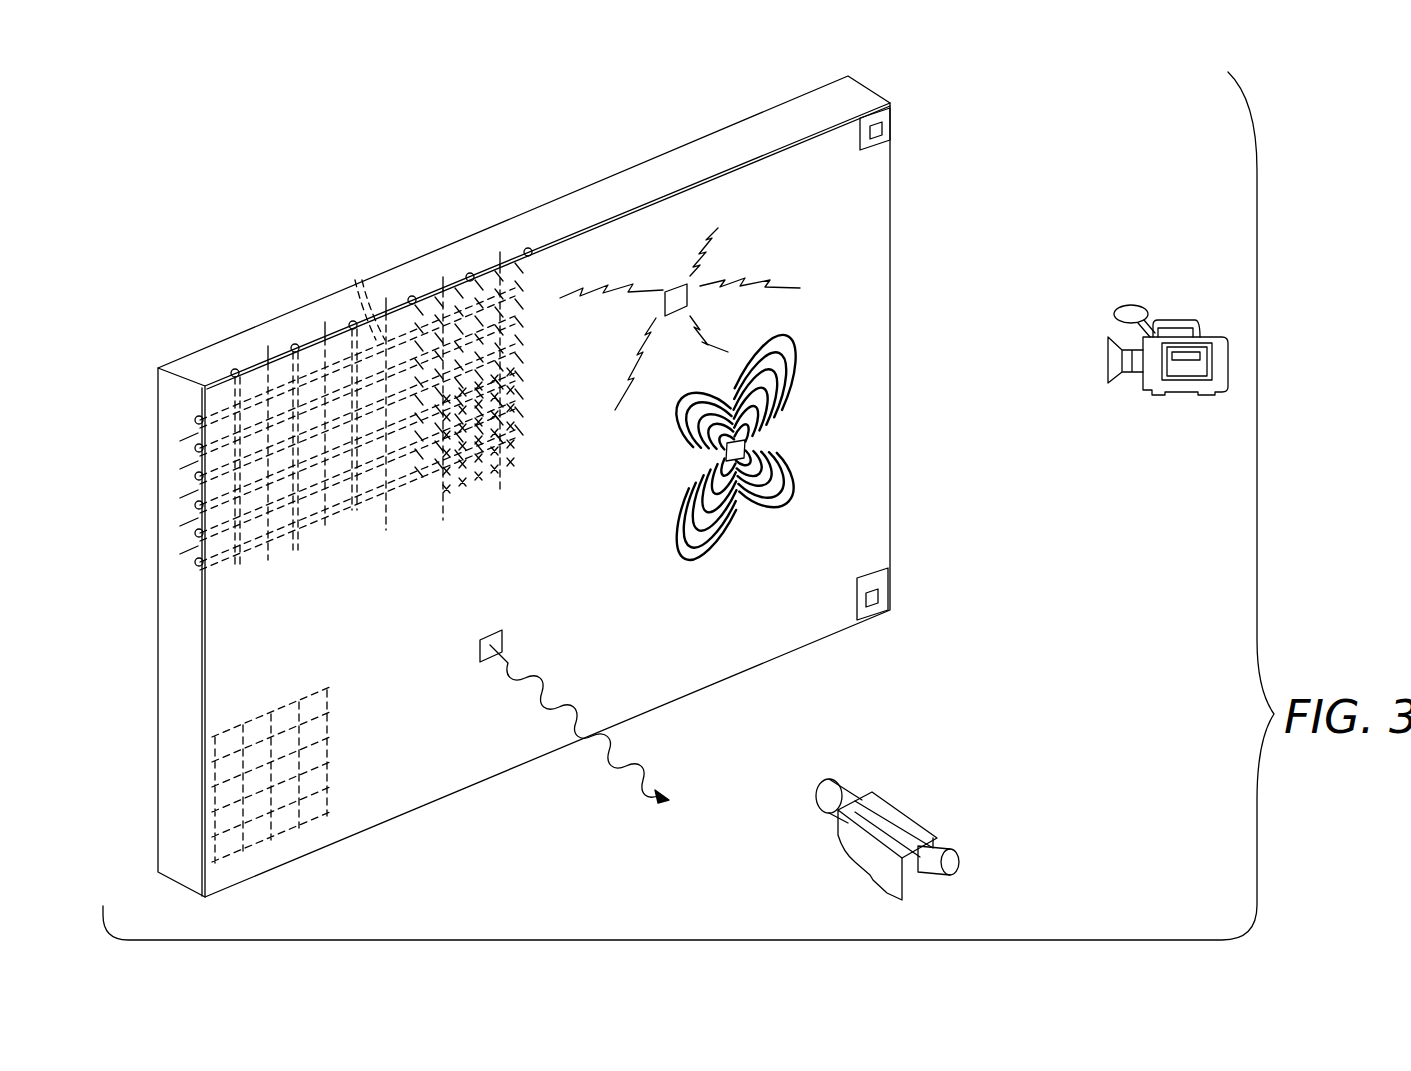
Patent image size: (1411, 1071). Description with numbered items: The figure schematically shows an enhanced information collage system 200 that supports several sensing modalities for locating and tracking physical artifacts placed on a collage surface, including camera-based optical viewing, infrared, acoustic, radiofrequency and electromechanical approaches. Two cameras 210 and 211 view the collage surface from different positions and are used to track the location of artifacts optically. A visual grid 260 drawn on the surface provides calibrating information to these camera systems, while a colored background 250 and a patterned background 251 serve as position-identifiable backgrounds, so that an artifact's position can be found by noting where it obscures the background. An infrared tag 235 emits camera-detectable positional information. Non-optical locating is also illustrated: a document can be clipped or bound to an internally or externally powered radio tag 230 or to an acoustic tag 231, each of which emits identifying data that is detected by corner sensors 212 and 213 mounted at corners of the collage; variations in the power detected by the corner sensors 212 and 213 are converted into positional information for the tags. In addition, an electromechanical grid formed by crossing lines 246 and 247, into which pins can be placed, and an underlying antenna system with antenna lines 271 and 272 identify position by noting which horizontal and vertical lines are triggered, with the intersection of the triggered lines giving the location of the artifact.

The information collage system 200 is at (944, 262).
The camera 210 is at (906, 822).
The camera 211 is at (1167, 382).
The corner sensor 212 is at (880, 128).
The corner sensor 213 is at (879, 598).
The radio tag 230 is at (666, 300).
The acoustic tag 231 is at (748, 438).
The infrared tag 235 is at (503, 642).
The electromechanical grid line 246 is at (326, 327).
The electromechanical grid line 247 is at (196, 505).
The colored background 250 is at (455, 322).
The patterned background 251 is at (510, 412).
The visual grid 260 is at (269, 698).
The antenna line 271 is at (293, 344).
The antenna line 272 is at (355, 280).